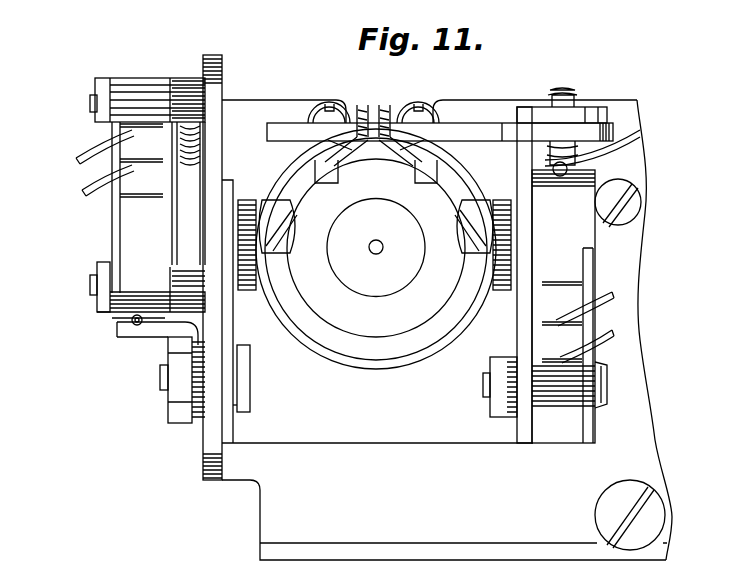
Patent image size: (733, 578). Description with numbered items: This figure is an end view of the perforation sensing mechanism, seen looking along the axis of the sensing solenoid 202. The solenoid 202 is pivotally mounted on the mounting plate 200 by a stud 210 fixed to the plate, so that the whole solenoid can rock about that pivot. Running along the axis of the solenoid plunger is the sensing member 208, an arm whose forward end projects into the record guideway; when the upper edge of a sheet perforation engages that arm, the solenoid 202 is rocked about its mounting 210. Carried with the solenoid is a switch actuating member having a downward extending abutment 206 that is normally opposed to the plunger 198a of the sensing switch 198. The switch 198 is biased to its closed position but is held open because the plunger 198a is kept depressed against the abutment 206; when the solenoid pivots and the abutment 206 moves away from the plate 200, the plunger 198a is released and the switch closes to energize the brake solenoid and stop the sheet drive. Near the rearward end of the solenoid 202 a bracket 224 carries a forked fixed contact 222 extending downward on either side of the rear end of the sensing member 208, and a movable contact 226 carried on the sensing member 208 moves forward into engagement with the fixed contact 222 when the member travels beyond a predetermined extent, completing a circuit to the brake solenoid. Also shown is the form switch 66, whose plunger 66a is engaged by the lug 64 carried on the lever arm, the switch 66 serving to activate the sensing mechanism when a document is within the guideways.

The lug 64 is at (130, 337).
The form switch 66 is at (120, 226).
The switch plunger 66a is at (125, 320).
The sensing switch 198 is at (585, 251).
The plunger 198a is at (600, 155).
The mounting plate 200 is at (385, 445).
The sensing solenoid 202 is at (401, 363).
The abutment 206 is at (612, 130).
The sensing member 208 is at (388, 228).
The stud 210 is at (256, 200).
The fixed contact 222 is at (420, 166).
The bracket 224 is at (330, 341).
The movable contact 226 is at (370, 330).